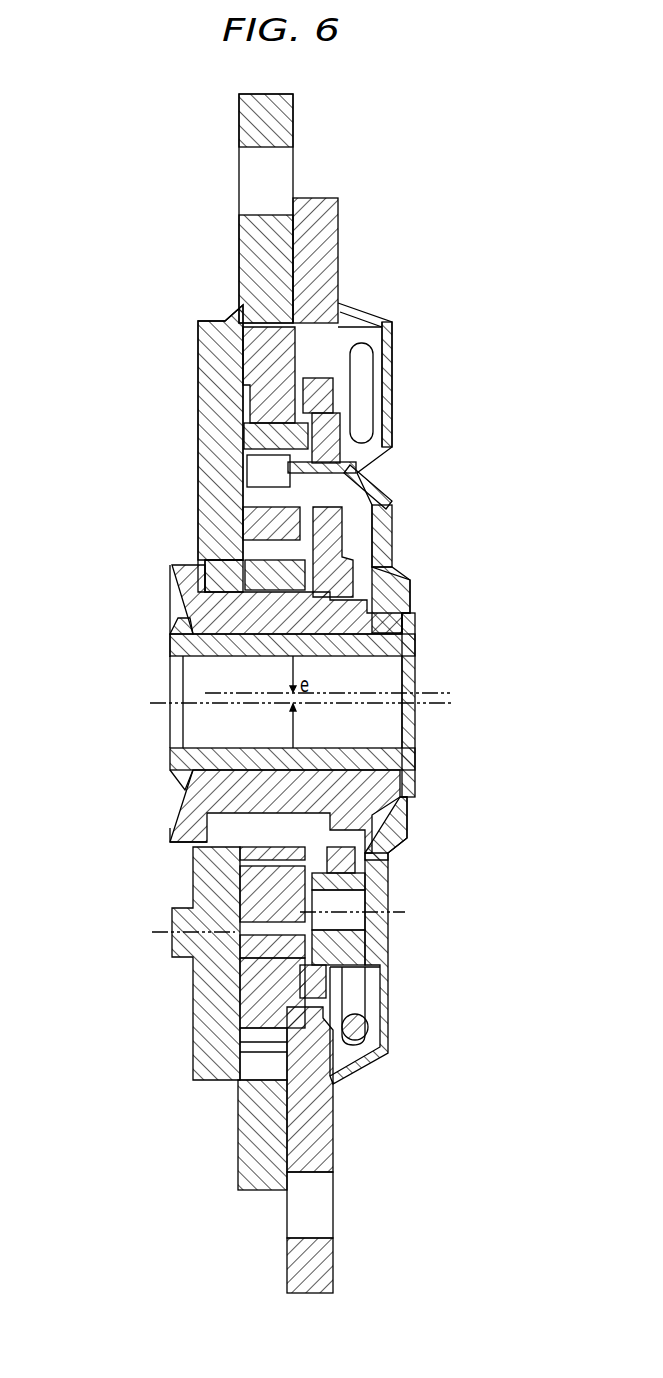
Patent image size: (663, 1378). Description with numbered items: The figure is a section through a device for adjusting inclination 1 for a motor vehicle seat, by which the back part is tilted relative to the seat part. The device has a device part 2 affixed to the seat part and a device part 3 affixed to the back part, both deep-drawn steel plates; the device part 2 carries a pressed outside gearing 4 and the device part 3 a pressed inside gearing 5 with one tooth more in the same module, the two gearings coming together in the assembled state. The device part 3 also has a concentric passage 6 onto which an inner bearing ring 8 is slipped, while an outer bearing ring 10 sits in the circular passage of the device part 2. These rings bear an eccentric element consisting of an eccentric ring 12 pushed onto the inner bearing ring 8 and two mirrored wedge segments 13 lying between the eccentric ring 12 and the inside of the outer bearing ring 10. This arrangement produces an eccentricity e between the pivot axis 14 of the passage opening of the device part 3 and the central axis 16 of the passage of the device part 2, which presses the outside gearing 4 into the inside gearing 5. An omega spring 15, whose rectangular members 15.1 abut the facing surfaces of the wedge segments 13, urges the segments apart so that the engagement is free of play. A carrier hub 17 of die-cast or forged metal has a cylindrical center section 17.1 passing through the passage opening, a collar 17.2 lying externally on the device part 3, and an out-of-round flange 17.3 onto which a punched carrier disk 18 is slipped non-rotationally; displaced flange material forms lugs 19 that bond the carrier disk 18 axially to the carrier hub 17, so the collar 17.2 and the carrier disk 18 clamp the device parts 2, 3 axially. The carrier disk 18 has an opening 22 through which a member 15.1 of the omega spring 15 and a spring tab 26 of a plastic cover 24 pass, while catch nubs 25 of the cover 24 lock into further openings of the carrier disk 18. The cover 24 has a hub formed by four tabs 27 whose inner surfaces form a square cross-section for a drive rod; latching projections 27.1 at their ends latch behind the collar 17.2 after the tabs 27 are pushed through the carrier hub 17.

The device for adjusting inclination 1 is at (128, 160).
The device part 2 is at (335, 1278).
The device part 3 is at (296, 127).
The outside gearing 4 is at (248, 1042).
The inside gearing 5 is at (257, 1068).
The passage 6 is at (183, 808).
The inner bearing ring 8 is at (240, 853).
The outer bearing ring 10 is at (220, 957).
The eccentric ring 12 is at (247, 883).
The wedge segments 13 is at (243, 497).
The pivot axis 14 is at (442, 703).
The omega spring 15 is at (385, 1003).
The rectangular members 15.1 is at (240, 476).
The central axis 16 is at (440, 693).
The carrier hub 17 is at (415, 608).
The cylindrical center section 17.1 is at (197, 585).
The collar 17.2 is at (188, 830).
The flange 17.3 is at (410, 785).
The carrier disk 18 is at (393, 508).
The lugs 19 is at (395, 568).
The opening 22 is at (380, 474).
The plastic cover 24 is at (410, 817).
The catch nubs 25 is at (392, 925).
The spring tab 26 is at (392, 412).
The tabs 27 is at (202, 657).
The latching projections 27.1 is at (168, 638).